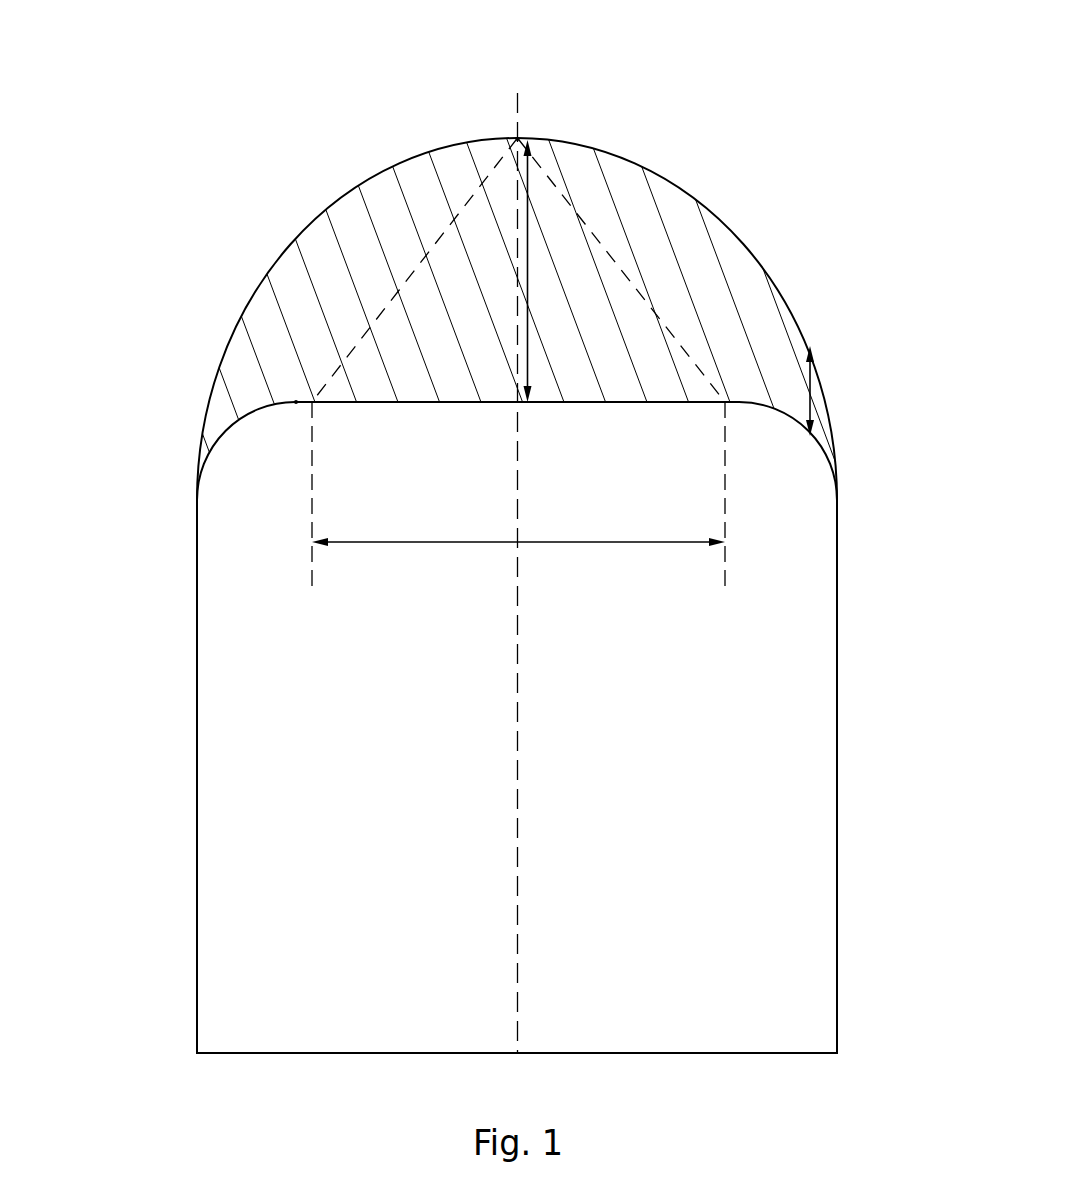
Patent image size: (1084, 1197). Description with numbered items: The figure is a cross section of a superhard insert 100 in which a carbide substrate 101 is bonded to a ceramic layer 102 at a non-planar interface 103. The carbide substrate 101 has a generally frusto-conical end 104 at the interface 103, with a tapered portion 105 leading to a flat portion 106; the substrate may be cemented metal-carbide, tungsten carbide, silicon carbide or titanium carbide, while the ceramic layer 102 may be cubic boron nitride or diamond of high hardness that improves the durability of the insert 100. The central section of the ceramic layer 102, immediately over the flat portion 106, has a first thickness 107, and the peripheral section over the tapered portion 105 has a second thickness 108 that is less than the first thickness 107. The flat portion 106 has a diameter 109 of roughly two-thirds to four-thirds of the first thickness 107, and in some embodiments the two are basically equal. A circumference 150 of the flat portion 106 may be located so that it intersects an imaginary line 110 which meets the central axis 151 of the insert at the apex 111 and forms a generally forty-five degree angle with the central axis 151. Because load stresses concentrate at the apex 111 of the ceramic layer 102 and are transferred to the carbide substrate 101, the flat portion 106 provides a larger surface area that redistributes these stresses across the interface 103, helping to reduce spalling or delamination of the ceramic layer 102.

The superhard insert 100 is at (148, 98).
The carbide substrate 101 is at (197, 728).
The ceramic layer 102 is at (368, 177).
The interface 103 is at (197, 504).
The frusto-conical end 104 is at (653, 406).
The tapered portion 105 is at (817, 447).
The flat portion 106 is at (453, 402).
The first thickness 107 is at (528, 240).
The second thickness 108 is at (812, 380).
The diameter 109 is at (463, 542).
The imaginary line 110 is at (387, 300).
The apex 111 is at (513, 145).
The circumference 150 is at (295, 398).
The central axis 151 is at (518, 779).